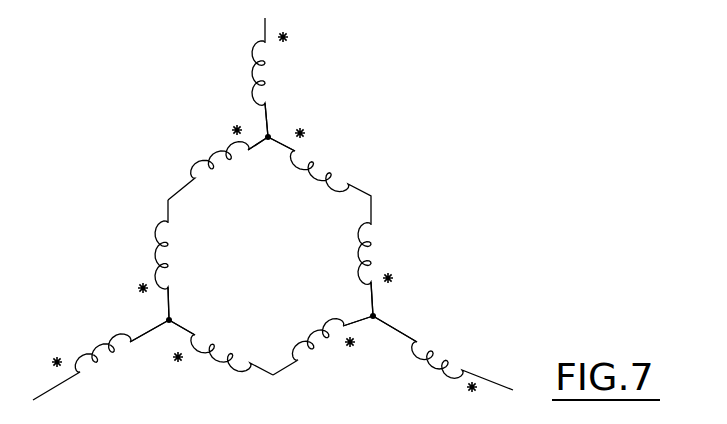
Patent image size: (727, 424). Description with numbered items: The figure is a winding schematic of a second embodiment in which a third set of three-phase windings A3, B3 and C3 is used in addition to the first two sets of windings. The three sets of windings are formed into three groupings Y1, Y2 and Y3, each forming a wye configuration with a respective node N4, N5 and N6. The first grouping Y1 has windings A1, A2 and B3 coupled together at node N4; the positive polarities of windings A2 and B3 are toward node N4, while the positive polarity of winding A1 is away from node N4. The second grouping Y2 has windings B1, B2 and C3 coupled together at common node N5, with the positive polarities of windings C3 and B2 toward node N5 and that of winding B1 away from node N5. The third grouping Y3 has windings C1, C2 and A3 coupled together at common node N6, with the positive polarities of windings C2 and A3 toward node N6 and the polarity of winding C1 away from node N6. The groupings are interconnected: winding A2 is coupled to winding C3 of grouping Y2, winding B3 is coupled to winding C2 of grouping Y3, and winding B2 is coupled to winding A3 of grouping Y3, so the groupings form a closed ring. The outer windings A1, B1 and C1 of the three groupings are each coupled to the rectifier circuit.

The winding A1 is at (278, 77).
The winding A2 is at (319, 176).
The winding A3 is at (221, 357).
The winding B1 is at (443, 356).
The winding B2 is at (323, 349).
The winding B3 is at (218, 162).
The winding C1 is at (101, 360).
The winding C2 is at (145, 260).
The winding C3 is at (382, 269).
The node N4 is at (266, 156).
The common node N5 is at (388, 309).
The common node N6 is at (185, 314).
The first grouping Y1 is at (238, 89).
The second grouping Y2 is at (438, 278).
The third grouping Y3 is at (114, 309).